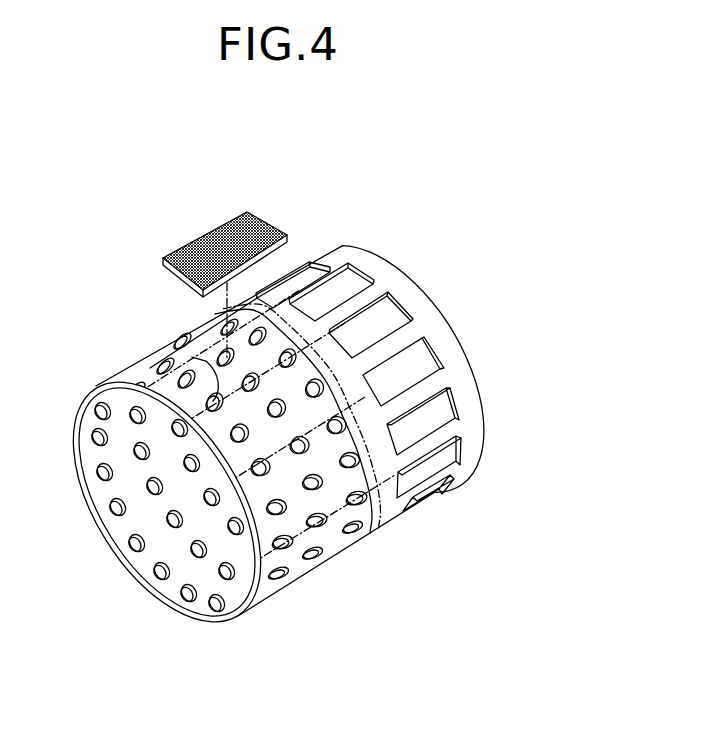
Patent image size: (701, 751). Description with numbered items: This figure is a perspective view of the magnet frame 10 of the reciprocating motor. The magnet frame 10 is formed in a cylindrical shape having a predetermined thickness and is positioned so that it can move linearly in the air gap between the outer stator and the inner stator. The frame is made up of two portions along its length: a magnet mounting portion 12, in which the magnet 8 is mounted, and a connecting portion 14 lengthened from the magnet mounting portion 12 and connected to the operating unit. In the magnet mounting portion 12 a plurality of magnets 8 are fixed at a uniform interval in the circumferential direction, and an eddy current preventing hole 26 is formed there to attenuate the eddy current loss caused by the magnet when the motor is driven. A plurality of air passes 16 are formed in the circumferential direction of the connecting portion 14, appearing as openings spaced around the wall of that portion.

The magnet 8 is at (248, 217).
The magnet frame 10 is at (283, 416).
The magnet mounting portion 12 is at (235, 450).
The connecting portion 14 is at (373, 389).
The air passes 16 is at (420, 415).
The eddy current preventing hole 26 is at (163, 364).